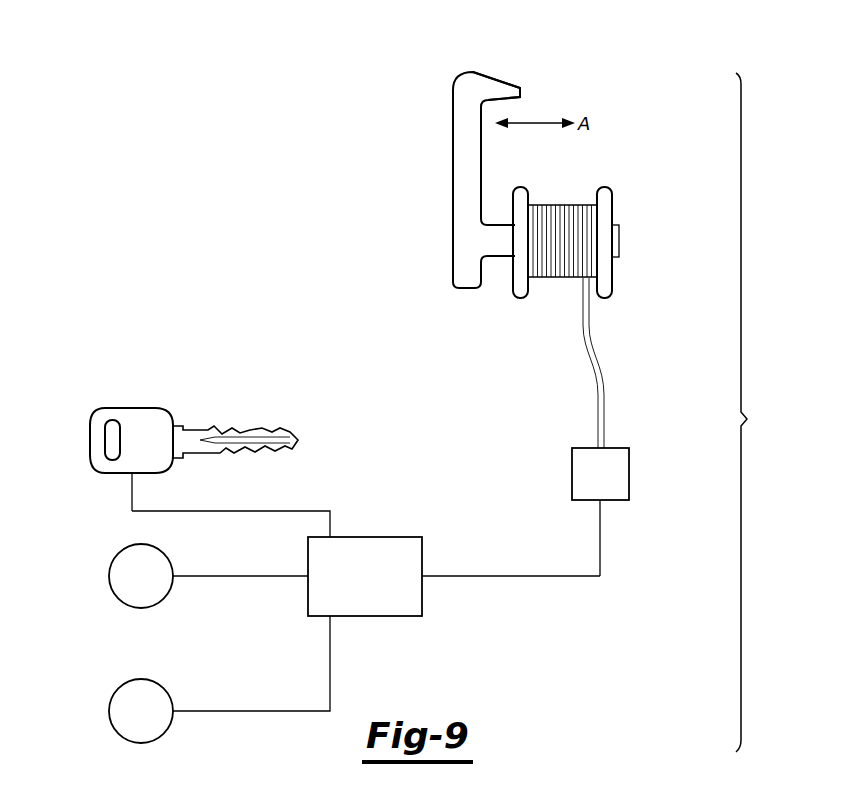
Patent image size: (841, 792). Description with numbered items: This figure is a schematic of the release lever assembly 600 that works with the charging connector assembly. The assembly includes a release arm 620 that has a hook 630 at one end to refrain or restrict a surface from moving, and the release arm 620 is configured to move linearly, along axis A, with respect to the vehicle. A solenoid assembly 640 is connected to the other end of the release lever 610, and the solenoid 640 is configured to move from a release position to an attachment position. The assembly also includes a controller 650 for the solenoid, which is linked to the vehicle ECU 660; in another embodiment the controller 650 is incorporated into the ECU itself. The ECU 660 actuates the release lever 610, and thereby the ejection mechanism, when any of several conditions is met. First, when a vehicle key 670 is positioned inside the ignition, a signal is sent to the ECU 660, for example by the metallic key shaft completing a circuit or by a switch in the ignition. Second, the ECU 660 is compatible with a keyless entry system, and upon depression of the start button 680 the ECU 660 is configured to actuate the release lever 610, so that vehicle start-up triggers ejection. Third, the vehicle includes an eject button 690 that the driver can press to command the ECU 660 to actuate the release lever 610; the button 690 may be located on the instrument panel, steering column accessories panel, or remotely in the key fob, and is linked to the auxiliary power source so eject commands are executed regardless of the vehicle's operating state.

The release lever assembly 600 is at (762, 412).
The release lever 610 is at (470, 160).
The release arm 620 is at (452, 143).
The hook 630 is at (493, 85).
The solenoid assembly 640 is at (615, 206).
The controller 650 is at (613, 487).
The vehicle ECU 660 is at (392, 537).
The vehicle key 670 is at (133, 408).
The start button 680 is at (109, 575).
The eject button 690 is at (109, 710).